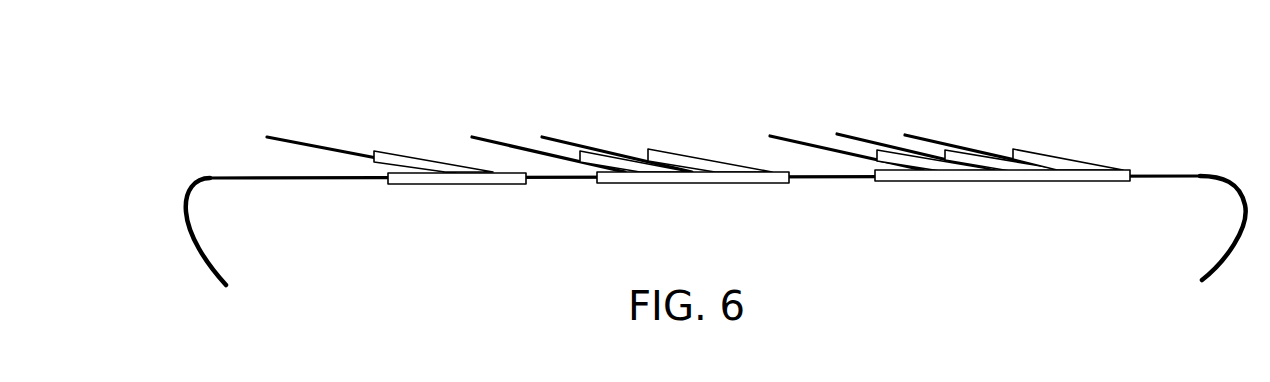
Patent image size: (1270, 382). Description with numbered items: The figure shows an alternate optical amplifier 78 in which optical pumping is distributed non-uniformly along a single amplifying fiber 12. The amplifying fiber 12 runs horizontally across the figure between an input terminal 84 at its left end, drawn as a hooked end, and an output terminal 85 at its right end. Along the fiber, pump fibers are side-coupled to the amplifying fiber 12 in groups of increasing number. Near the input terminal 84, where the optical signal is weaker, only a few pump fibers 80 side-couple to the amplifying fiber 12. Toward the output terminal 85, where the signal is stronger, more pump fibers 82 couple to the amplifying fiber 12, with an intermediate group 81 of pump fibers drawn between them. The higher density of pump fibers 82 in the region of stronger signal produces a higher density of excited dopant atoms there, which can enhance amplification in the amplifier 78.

The amplifying fiber 12 is at (288, 180).
The optical amplifier 78 is at (697, 90).
The pump fibers 80 is at (283, 137).
The second anchor arm group 81 is at (553, 132).
The pump fibers 82 is at (925, 133).
The input terminal 84 is at (210, 272).
The output terminal 85 is at (1223, 247).